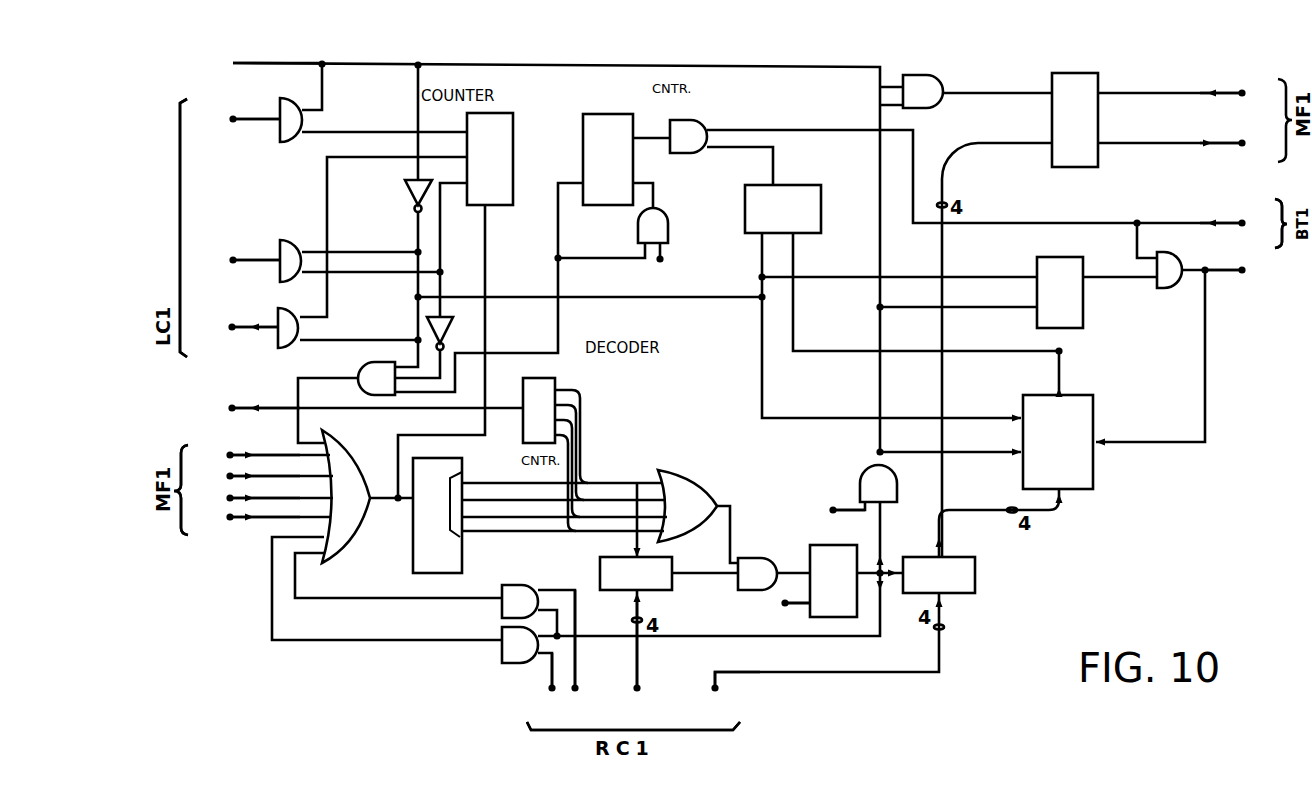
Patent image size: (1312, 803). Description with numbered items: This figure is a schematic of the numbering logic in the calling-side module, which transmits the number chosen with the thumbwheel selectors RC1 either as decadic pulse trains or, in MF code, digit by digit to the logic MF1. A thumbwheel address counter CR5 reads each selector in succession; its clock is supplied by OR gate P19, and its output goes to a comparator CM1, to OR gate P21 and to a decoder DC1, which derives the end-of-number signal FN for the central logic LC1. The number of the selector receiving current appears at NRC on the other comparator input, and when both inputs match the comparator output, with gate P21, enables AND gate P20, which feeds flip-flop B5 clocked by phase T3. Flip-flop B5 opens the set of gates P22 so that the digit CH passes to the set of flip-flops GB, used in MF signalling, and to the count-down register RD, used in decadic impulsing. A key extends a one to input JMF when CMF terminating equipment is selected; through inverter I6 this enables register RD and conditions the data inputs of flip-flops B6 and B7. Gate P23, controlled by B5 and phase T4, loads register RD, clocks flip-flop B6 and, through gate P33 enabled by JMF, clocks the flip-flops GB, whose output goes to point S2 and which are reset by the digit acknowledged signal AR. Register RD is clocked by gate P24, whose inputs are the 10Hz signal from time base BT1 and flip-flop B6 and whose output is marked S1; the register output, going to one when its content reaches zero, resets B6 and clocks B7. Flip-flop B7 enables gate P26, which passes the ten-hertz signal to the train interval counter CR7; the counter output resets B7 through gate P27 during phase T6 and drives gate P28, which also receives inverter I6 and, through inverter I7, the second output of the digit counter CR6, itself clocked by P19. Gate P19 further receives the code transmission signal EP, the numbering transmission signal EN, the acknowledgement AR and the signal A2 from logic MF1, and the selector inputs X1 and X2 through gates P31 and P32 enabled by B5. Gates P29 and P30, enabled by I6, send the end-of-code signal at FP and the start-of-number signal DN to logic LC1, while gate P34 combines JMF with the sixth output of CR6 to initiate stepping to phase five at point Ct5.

The input point JMF is at (253, 63).
The phase-five stepping point Ct5 is at (234, 119).
The FP signal terminal FP is at (234, 260).
The start-of-number signal DN is at (233, 327).
The end-of-number signal FN is at (244, 408).
The code transmission signal EP is at (244, 455).
The numbering transmission signal EN is at (244, 474).
The digit acknowledged signal AR is at (736, 295).
The all-digits demand signal A2 is at (244, 515).
The output point S2 is at (1240, 143).
The ten hertz signal 10Hz is at (1234, 210).
The S1 signal terminal S1 is at (1242, 270).
The time base phase T6 is at (679, 257).
The time base phase T4 is at (835, 498).
The time base phase T3 is at (781, 604).
The thumbwheel selector input X1 is at (552, 686).
The thumbwheel selector input X2 is at (582, 655).
The selector number input NRC is at (636, 660).
The digit CH is at (729, 696).
The AND gate P34 is at (288, 149).
The AND gate P29 is at (290, 250).
The AND gate P30 is at (284, 313).
The AND gate P28 is at (370, 371).
The inverter I6 is at (406, 197).
The inverter I7 is at (447, 326).
The digit counter CR6 is at (506, 113).
The train interval counter CR7 is at (610, 116).
The AND gate P26 is at (700, 123).
The AND gate P27 is at (659, 230).
The flip-flop B7 is at (778, 190).
The AND gate P33 is at (932, 88).
The set of flip-flops GB is at (1083, 88).
The flip-flop B6 is at (1082, 264).
The AND gate P24 is at (1167, 290).
The count-down register RD is at (1088, 418).
The decoder DC1 is at (553, 384).
The thumbwheel address counter CR5 is at (462, 472).
The OR gate P19 is at (347, 476).
The OR gate P21 is at (700, 493).
The AND gate P23 is at (858, 480).
The AND gate P20 is at (755, 566).
The flip-flop B5 is at (814, 545).
The set of gates P22 is at (970, 580).
The comparator CM1 is at (600, 566).
The AND gate P32 is at (516, 594).
The AND gate P31 is at (503, 648).
The central logic LC1 is at (183, 228).
The MF logic MF1 is at (181, 490).
The time base BT1 is at (1281, 223).
The thumbwheel selectors RC1 is at (633, 726).